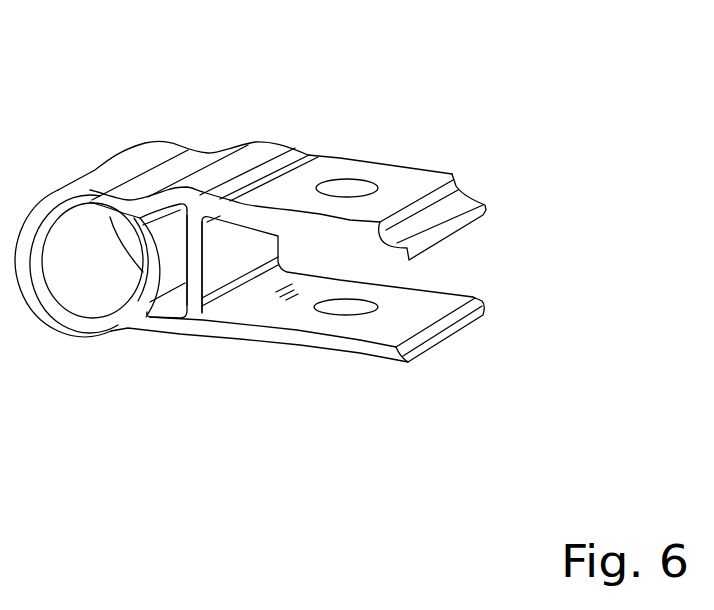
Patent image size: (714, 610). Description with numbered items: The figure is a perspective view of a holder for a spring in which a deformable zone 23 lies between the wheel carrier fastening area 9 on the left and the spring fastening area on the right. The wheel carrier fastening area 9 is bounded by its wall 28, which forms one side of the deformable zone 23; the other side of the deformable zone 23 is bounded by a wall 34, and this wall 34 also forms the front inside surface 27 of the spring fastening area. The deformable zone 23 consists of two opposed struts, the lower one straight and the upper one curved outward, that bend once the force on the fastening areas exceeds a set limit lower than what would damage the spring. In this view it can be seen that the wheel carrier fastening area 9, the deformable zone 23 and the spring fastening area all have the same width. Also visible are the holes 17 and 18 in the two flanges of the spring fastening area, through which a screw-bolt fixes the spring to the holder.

The wheel carrier fastening area 9 is at (90, 290).
The hole 17 is at (343, 190).
The hole 18 is at (350, 308).
The deformable zone 23 is at (165, 270).
The front inside surface 27 is at (245, 250).
The wall 28 is at (142, 218).
The wall 34 is at (192, 240).